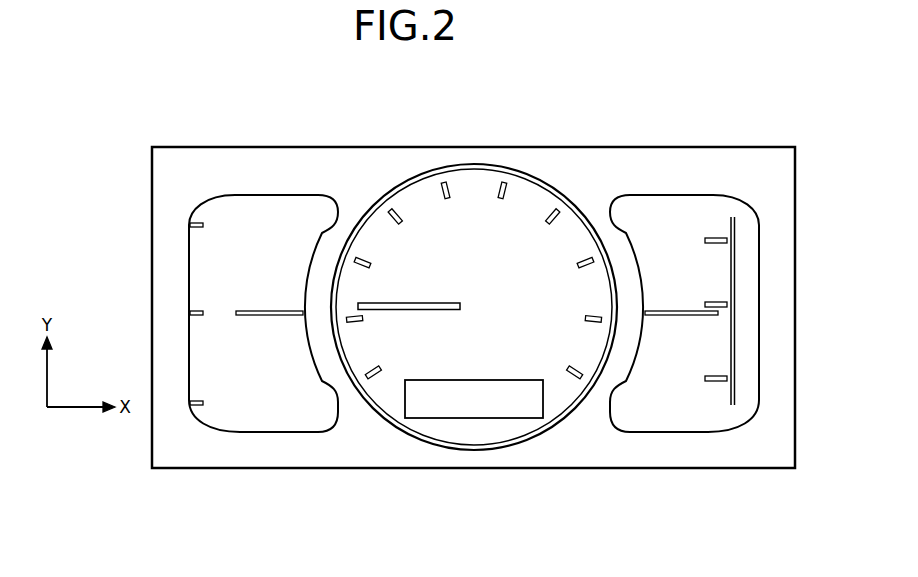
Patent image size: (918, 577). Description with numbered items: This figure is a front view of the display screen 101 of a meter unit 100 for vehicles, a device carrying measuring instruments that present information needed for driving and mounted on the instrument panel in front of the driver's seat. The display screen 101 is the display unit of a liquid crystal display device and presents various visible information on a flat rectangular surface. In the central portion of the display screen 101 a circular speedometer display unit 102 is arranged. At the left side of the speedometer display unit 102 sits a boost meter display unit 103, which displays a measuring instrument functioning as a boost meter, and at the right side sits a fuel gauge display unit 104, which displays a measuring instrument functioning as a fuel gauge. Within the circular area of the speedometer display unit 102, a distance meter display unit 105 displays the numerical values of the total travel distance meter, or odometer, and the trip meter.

The meter unit 100 is at (79, 105).
The display screen 101 is at (620, 149).
The speedometer display unit 102 is at (469, 190).
The boost meter display unit 103 is at (283, 405).
The fuel gauge display unit 104 is at (667, 405).
The distance meter display unit 105 is at (452, 410).